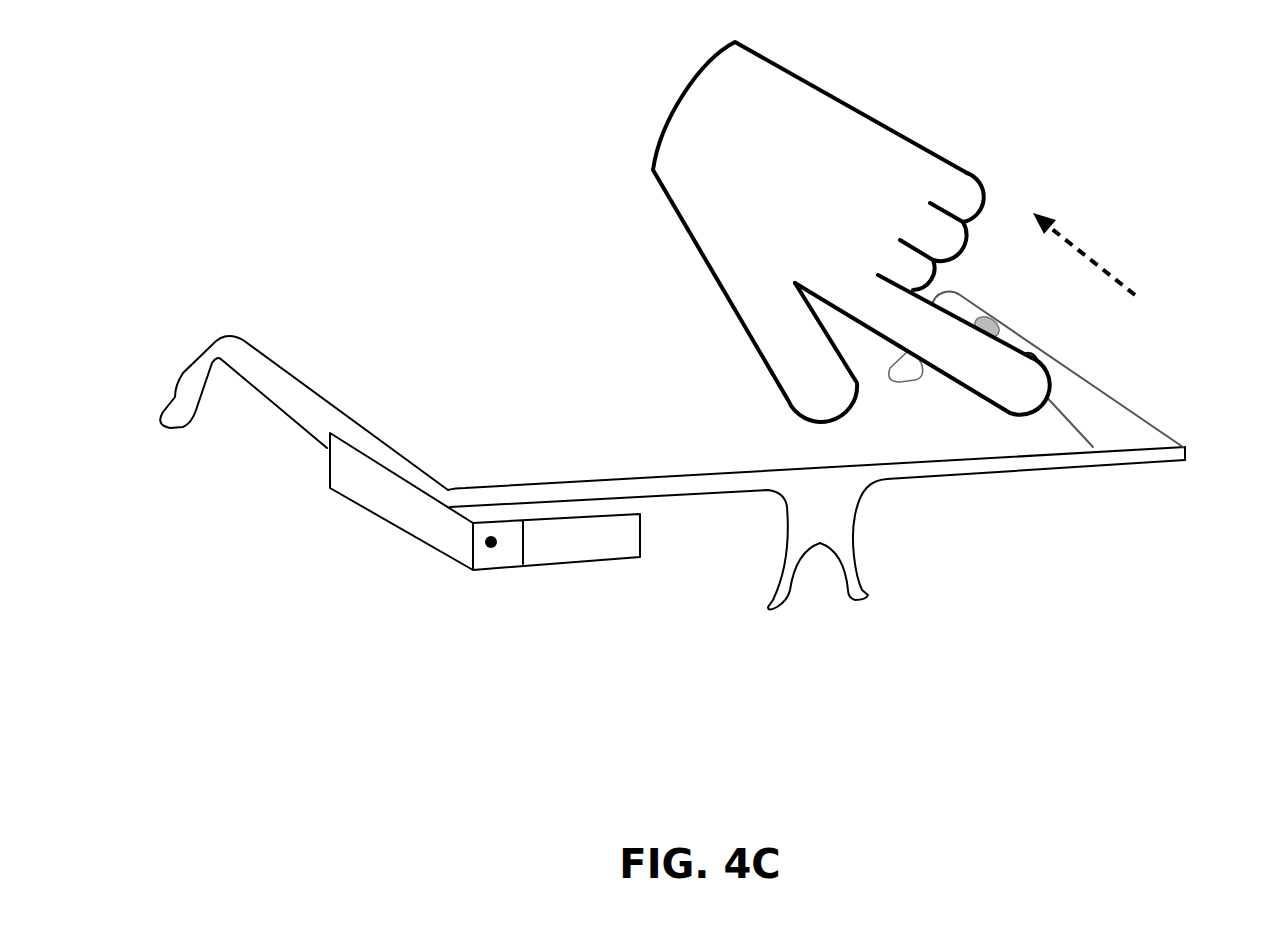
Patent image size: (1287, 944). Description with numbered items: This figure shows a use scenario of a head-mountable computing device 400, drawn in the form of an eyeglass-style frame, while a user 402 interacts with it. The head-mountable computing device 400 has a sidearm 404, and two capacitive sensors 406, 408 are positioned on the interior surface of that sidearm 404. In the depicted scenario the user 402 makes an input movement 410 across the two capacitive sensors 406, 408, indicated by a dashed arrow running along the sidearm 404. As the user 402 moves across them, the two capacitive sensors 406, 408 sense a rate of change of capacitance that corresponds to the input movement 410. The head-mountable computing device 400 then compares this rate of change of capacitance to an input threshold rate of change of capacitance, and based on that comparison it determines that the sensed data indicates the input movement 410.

The head-mountable computing device 400 is at (1152, 474).
The user 402 is at (870, 113).
The sidearm 404 is at (1105, 408).
The capacitive sensor 406 is at (993, 325).
The capacitive sensor 408 is at (1037, 358).
The input movement 410 is at (1095, 263).